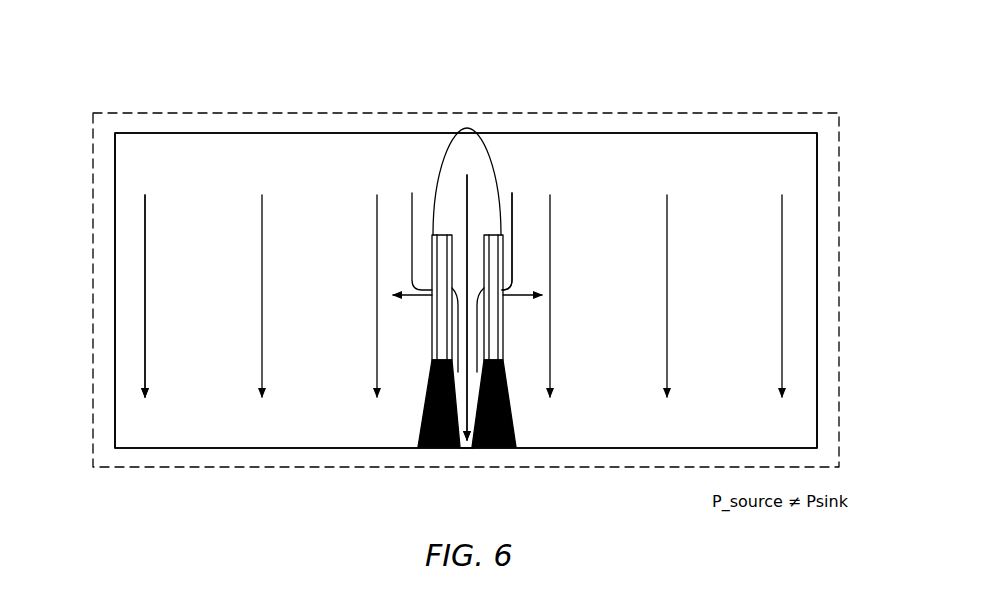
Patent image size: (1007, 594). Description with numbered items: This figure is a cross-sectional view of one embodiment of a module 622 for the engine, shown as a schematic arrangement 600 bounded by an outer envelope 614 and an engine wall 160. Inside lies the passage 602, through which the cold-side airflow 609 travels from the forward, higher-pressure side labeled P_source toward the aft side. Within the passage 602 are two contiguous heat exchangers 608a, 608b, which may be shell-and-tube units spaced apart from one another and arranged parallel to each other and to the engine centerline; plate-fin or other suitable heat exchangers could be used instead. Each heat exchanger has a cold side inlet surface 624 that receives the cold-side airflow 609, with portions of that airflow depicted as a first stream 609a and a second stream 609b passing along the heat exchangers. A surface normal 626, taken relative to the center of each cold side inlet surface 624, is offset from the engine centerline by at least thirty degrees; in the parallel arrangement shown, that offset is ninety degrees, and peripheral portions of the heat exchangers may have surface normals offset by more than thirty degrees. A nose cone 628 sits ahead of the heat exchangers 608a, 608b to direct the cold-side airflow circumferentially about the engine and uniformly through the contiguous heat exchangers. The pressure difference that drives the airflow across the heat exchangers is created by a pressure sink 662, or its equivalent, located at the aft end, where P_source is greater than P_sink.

The flow schematic 600 is at (63, 76).
The ambient boundary 614 is at (208, 112).
The passage 602 is at (285, 198).
The nacelle wall 160 is at (762, 131).
The module 622 is at (430, 158).
The nose cone 628 is at (482, 138).
The heat exchanger 608a is at (433, 236).
The heat exchanger 608b is at (490, 234).
The cold-side airflow 609 is at (412, 206).
The first flow stream 609a is at (147, 272).
The second flow stream 609b is at (514, 243).
The surface normal 626 is at (420, 300).
The cold side inlet surface 624 is at (432, 338).
The pressure sink 662 is at (460, 449).